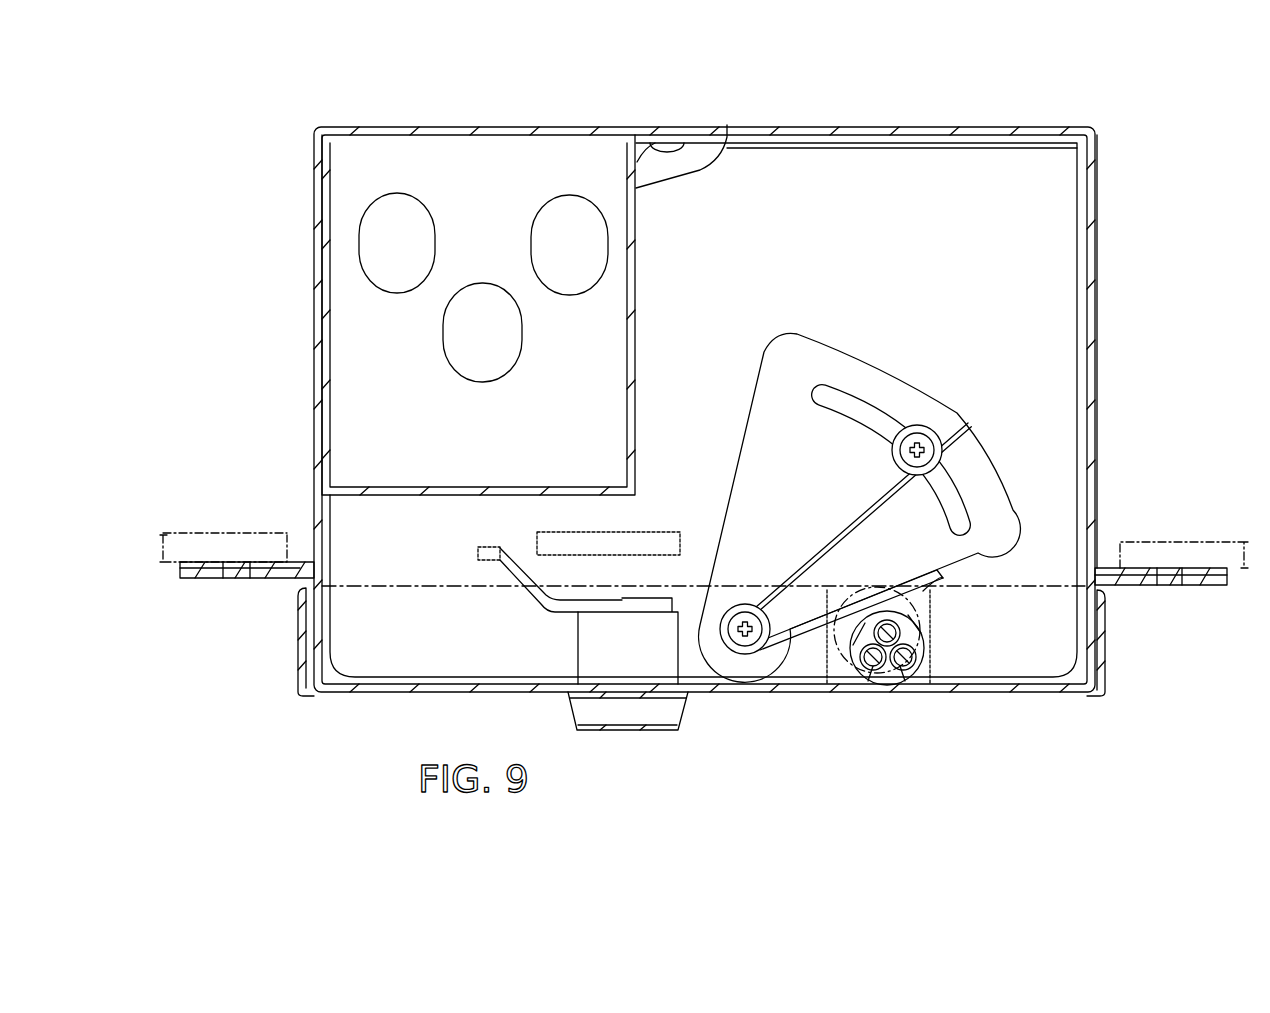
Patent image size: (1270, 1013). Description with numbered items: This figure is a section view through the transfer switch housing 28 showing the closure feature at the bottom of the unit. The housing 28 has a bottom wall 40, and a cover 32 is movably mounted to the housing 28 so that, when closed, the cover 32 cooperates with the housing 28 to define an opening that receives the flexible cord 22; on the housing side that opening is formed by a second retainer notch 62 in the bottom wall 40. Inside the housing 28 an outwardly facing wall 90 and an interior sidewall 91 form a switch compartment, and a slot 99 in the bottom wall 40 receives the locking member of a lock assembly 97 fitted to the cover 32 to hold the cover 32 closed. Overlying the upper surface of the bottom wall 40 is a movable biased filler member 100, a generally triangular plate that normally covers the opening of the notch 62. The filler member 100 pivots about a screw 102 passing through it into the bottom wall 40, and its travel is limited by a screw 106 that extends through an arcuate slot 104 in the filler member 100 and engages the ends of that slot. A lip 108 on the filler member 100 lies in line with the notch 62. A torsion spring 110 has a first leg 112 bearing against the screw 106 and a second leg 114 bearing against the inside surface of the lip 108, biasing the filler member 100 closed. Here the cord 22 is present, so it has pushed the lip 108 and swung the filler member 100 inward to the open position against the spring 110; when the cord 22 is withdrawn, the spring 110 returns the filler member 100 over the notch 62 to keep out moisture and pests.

The housing 28 is at (1098, 128).
The cover 32 is at (1108, 682).
The bottom wall 40 is at (1060, 313).
The outwardly facing wall 90 is at (350, 496).
The interior sidewall 91 is at (727, 125).
The lock assembly 97 is at (568, 714).
The slot 99 is at (567, 550).
The filler member 100 is at (932, 556).
The screw 102 is at (780, 640).
The arcuate slot 104 is at (957, 527).
The screw 106 is at (957, 422).
The lip 108 is at (923, 590).
The torsion spring 110 is at (795, 645).
The first leg 112 is at (942, 437).
The second leg 114 is at (913, 580).
The second retainer notch 62 is at (883, 667).
The cord 22 is at (917, 678).